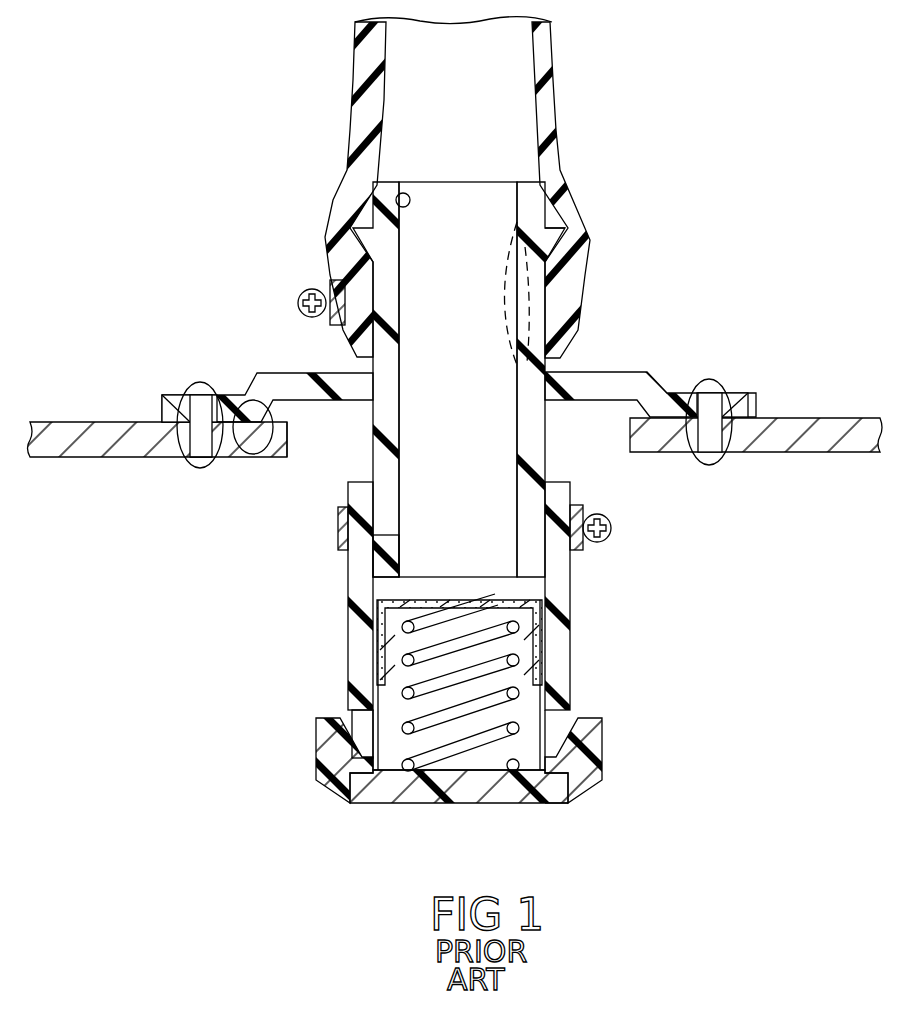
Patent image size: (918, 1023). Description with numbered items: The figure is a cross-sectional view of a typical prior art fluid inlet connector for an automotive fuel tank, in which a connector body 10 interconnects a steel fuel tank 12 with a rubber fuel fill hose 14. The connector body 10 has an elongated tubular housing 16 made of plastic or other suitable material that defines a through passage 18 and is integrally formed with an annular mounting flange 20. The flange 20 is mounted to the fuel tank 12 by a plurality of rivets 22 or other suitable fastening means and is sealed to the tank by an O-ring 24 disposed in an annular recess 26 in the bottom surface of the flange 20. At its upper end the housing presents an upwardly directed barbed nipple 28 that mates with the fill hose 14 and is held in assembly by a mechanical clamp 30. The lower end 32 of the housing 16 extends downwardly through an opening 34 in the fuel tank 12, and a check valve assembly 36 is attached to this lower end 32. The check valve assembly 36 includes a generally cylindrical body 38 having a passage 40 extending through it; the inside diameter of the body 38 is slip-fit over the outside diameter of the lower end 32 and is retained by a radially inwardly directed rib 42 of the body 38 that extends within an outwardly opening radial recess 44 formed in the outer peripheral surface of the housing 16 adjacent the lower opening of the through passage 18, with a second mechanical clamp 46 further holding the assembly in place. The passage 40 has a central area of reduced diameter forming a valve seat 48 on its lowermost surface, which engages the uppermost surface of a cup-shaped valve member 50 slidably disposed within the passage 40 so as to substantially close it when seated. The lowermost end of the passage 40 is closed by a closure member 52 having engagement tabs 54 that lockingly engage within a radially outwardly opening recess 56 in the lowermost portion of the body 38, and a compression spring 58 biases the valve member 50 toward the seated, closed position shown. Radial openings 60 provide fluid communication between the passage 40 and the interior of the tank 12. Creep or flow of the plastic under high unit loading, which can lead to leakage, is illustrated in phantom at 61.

The connector body 10 is at (640, 480).
The fuel tank 12 is at (822, 418).
The fuel fill hose 14 is at (355, 118).
The tubular housing 16 is at (476, 456).
The through passage 18 is at (396, 200).
The mounting flange 20 is at (632, 375).
The rivets 22 is at (196, 390).
The O-ring 24 is at (200, 466).
The annular recess 26 is at (255, 454).
The barbed nipple 28 is at (553, 222).
The mechanical clamp 30 is at (298, 298).
The lower end 32 is at (545, 505).
The opening 34 is at (288, 432).
The check valve assembly 36 is at (652, 707).
The cylindrical body 38 is at (355, 600).
The passage 40 is at (548, 797).
The rib 42 is at (338, 530).
The radial recess 44 is at (373, 560).
The mechanical clamp 46 is at (612, 537).
The valve seat 48 is at (547, 578).
The valve member 50 is at (533, 645).
The closure member 52 is at (572, 790).
The engagement tabs 54 is at (327, 745).
The recess 56 is at (352, 730).
The compression spring 58 is at (450, 760).
The radial openings 60 is at (362, 660).
The creep 61 is at (503, 283).